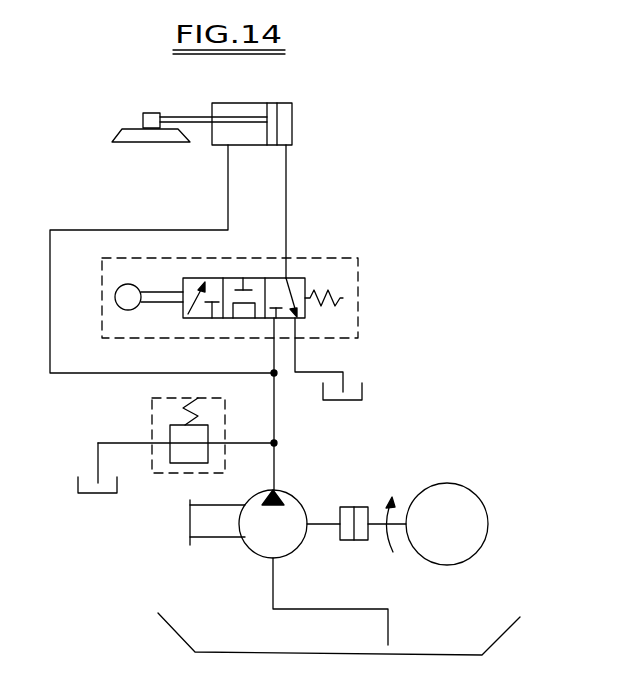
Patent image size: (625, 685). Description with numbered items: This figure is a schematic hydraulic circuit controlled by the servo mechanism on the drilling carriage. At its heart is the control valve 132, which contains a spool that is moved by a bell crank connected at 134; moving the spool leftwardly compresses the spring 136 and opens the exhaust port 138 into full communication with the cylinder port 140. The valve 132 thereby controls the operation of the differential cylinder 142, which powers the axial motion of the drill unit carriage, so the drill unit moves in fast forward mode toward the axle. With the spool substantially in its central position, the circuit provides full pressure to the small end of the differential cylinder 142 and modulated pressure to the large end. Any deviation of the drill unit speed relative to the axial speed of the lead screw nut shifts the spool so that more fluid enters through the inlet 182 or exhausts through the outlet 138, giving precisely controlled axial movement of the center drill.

The differential cylinder 142 is at (293, 130).
The control valve 132 is at (298, 255).
The cylinder port 140 is at (285, 282).
The spring 136 is at (345, 293).
The connection of bell crank to spool 134 is at (127, 305).
The inlet 182 is at (275, 320).
The exhaust port 138 is at (296, 318).